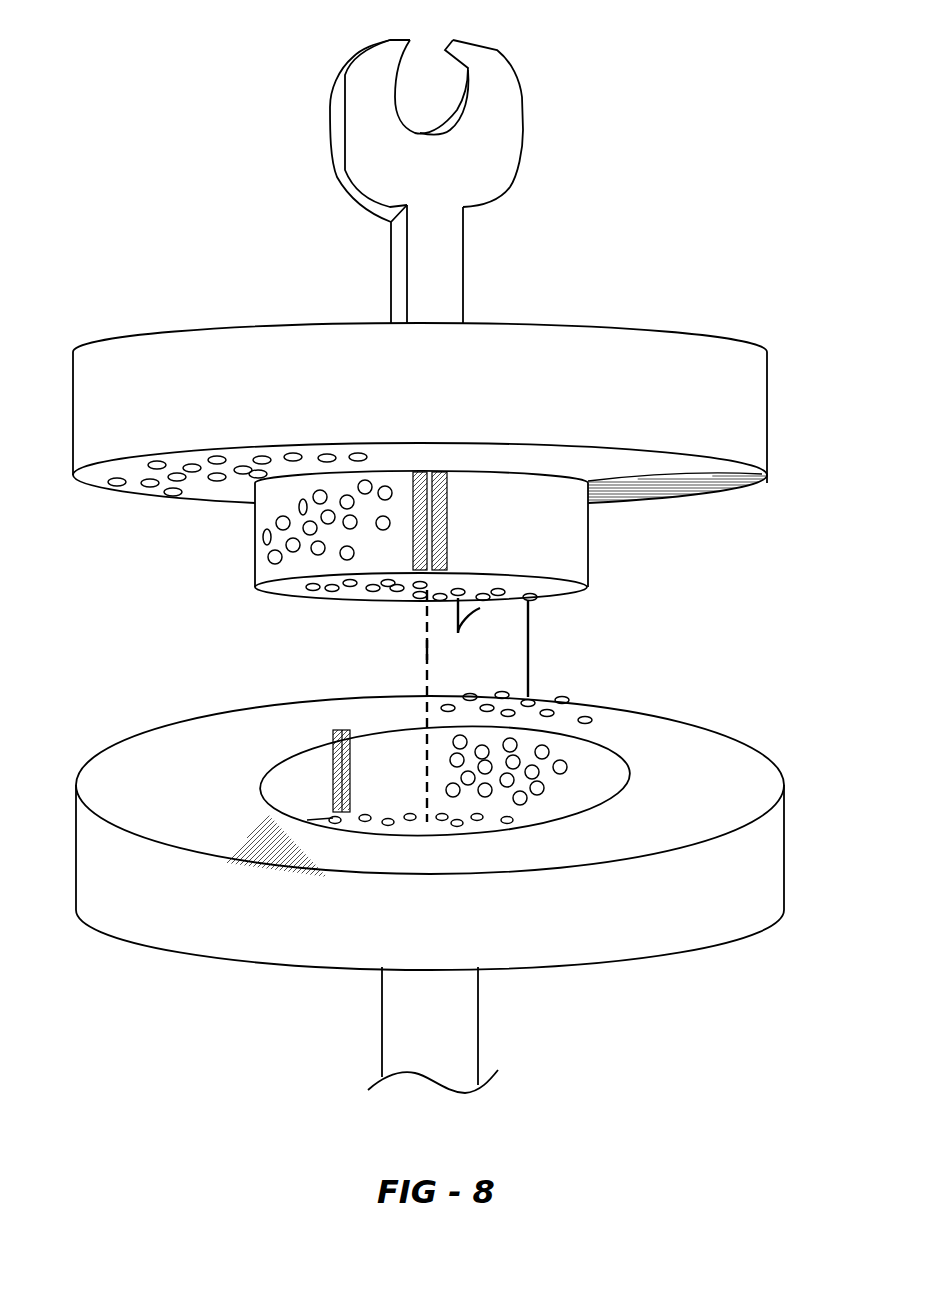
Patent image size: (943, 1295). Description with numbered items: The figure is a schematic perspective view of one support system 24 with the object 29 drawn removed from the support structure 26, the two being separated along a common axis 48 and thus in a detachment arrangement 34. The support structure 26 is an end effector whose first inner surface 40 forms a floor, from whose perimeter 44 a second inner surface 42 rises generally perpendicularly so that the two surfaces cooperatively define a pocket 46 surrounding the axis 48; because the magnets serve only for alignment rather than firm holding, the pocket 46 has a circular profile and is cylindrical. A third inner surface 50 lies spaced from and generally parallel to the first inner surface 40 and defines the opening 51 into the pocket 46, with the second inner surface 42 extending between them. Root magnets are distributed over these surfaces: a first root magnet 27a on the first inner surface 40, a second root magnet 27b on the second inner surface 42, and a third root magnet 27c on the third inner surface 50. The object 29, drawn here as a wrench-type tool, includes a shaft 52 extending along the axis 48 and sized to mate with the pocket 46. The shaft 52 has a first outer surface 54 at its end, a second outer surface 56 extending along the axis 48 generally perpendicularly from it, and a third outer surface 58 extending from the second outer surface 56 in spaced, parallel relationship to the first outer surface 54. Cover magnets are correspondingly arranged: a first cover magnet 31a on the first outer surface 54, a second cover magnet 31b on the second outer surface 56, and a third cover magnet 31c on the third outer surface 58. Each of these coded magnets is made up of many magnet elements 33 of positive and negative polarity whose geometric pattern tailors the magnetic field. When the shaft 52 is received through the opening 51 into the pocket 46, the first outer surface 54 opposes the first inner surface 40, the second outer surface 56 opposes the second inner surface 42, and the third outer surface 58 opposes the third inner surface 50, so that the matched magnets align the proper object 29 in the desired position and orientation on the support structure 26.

The support system 24 is at (140, 243).
The object 29 is at (115, 358).
The third cover magnet 31c is at (290, 456).
The second cover magnet 31b is at (385, 494).
The first cover magnet 31a is at (427, 637).
The magnet elements 33 is at (150, 484).
The detachment arrangement 34 is at (78, 625).
The shaft 52 is at (258, 521).
The second outer surface 56 is at (587, 548).
The first outer surface 54 is at (562, 596).
The third outer surface 58 is at (512, 462).
The axis 48 is at (427, 630).
The support structure 26 is at (137, 745).
The first inner surface 40 is at (552, 814).
The first root magnet 27a is at (366, 808).
The second root magnet 27b is at (333, 770).
The third root magnet 27c is at (558, 700).
The second inner surface 42 is at (326, 745).
The perimeter 44 is at (307, 820).
The pocket 46 is at (246, 803).
The third inner surface 50 is at (153, 730).
The opening 51 is at (260, 773).